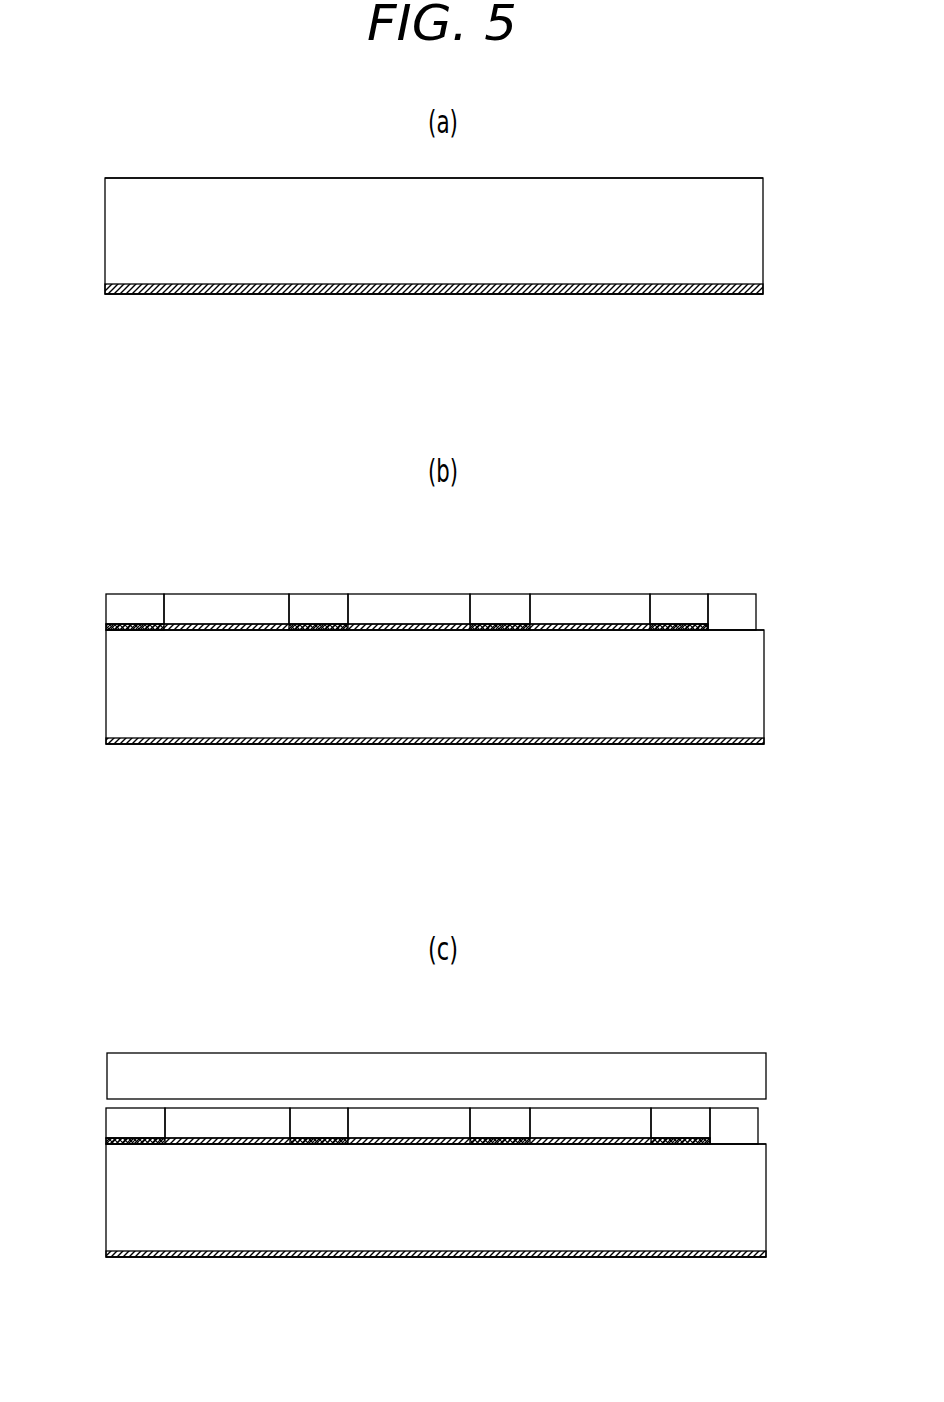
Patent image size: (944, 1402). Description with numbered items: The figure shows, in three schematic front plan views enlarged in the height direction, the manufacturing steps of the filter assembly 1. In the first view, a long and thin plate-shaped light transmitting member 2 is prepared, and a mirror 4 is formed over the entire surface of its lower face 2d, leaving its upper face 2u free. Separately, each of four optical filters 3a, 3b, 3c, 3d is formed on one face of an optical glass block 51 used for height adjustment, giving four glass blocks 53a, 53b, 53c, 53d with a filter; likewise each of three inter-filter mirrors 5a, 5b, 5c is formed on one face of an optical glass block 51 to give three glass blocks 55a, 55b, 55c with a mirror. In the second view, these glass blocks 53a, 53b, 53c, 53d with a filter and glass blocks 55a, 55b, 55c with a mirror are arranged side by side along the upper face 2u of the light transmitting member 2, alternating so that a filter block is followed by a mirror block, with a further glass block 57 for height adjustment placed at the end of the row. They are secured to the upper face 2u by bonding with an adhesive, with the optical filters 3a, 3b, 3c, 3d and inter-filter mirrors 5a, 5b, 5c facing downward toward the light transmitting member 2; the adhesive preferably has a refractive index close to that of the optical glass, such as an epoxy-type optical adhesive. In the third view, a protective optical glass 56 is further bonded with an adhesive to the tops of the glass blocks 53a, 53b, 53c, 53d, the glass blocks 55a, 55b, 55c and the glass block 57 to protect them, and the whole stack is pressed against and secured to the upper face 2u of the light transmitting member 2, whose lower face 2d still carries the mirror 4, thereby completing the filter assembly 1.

The filter assembly 1 is at (122, 997).
The light transmitting member 2 is at (763, 203).
The upper face of light transmitting member 2u is at (738, 178).
The lower face of light transmitting member 2d is at (745, 294).
The mirror 4 is at (643, 294).
The optical filter 3a is at (132, 632).
The optical filter 3b is at (322, 632).
The optical filter 3c is at (500, 632).
The optical filter 3d is at (678, 632).
The inter-filter mirror 5a is at (228, 632).
The inter-filter mirror 5b is at (410, 632).
The inter-filter mirror 5c is at (578, 632).
The optical glass block 51 is at (152, 594).
The glass block with a filter 53a is at (136, 578).
The glass block with a filter 53b is at (320, 578).
The glass block with a filter 53c is at (502, 578).
The glass block with a filter 53d is at (680, 578).
The glass block with a mirror 55a is at (226, 578).
The glass block with a mirror 55b is at (410, 578).
The glass block with a mirror 55c is at (595, 578).
The protective optical glass 56 is at (767, 1060).
The glass block for height adjustment 57 is at (740, 592).